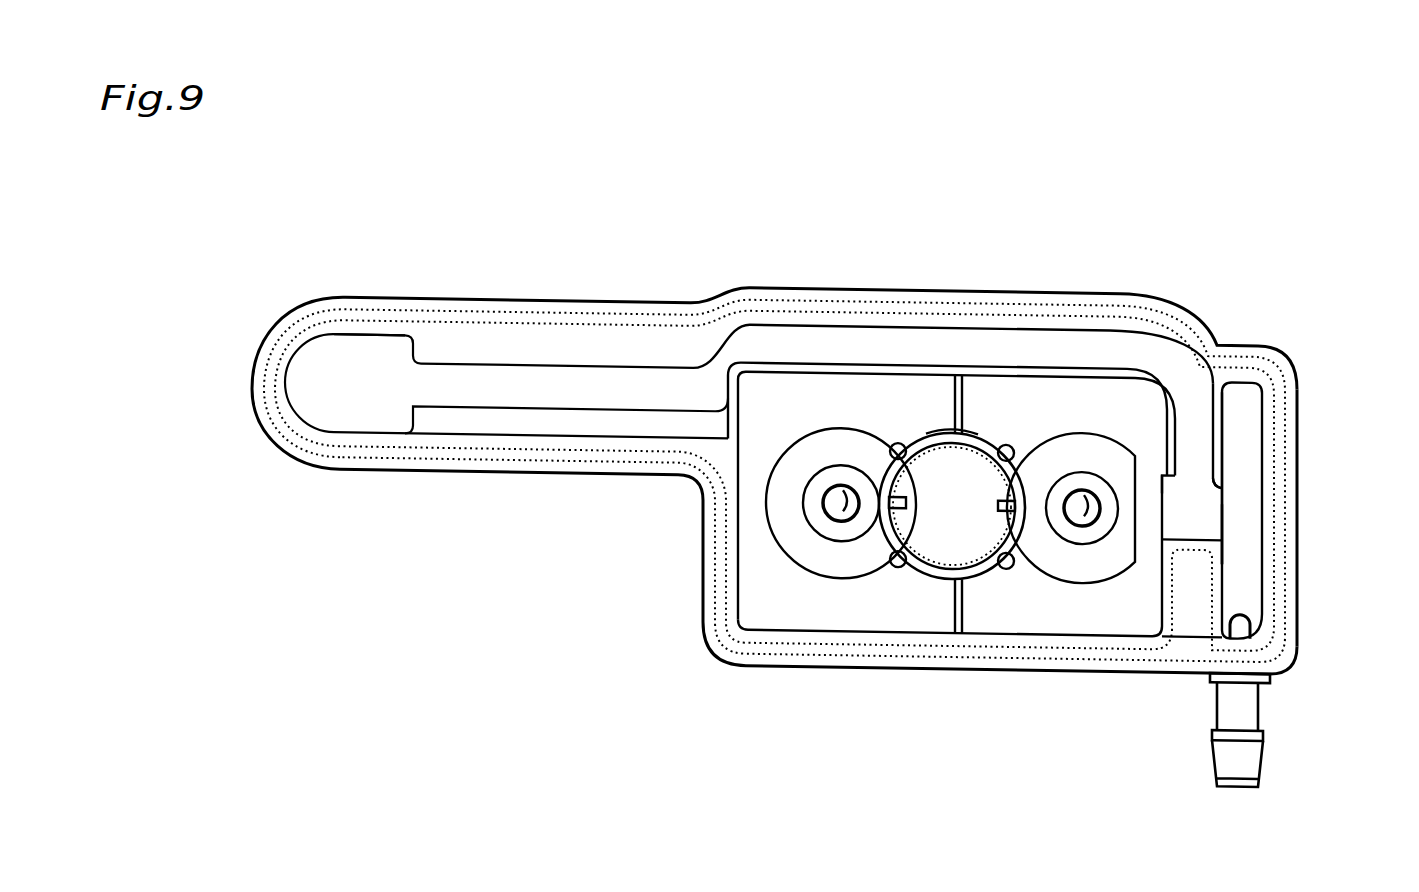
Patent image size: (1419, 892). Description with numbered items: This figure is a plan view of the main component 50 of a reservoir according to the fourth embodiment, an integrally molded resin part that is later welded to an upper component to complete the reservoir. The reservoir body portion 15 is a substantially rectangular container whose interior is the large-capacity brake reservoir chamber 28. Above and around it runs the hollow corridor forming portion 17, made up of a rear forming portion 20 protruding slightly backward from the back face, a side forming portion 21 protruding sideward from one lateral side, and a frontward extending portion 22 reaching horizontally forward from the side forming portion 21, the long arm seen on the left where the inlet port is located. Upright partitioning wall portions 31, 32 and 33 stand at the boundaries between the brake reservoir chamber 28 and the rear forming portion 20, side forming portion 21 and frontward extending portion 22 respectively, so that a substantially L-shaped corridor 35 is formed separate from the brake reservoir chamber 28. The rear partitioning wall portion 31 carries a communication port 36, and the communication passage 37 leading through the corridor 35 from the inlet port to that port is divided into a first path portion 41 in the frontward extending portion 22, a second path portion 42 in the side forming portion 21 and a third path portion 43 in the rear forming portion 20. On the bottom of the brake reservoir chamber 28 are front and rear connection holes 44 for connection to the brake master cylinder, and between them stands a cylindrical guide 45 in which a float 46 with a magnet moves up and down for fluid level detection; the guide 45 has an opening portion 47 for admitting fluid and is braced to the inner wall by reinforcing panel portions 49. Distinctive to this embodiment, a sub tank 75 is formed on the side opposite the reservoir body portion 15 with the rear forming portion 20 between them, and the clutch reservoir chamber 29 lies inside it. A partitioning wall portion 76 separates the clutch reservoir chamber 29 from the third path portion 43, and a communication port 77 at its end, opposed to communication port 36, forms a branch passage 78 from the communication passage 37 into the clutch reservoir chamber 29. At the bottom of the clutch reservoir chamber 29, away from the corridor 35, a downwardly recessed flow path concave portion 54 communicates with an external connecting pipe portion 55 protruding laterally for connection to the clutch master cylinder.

The reservoir body portion 15 is at (935, 678).
The corridor forming portion 17 is at (593, 290).
The rear forming portion 20 is at (1208, 441).
The side forming portion 21 is at (866, 291).
The frontward extending portion 22 is at (446, 298).
The brake reservoir chamber 28 is at (758, 592).
The clutch reservoir chamber 29 is at (1248, 552).
The partitioning wall portion 31 is at (1174, 458).
The partitioning wall portion 32 is at (1062, 368).
The partitioning wall portion 33 is at (748, 414).
The corridor 35 is at (907, 333).
The communication port 36 is at (1221, 506).
The communication passage 37 is at (666, 385).
The first path portion 41 is at (521, 383).
The second path portion 42 is at (819, 342).
The third path portion 43 is at (1194, 417).
The connection holes 44 is at (833, 500).
The guide 45 is at (990, 562).
The float 46 is at (924, 562).
The opening portion 47 is at (909, 440).
The reinforcing panel portion 49 is at (964, 406).
The main component 50 is at (1295, 317).
The flow path concave portion 54 is at (1240, 628).
The external connecting pipe portion 55 is at (1248, 768).
The sub tank 75 is at (1299, 590).
The partitioning wall portion 76 is at (1227, 427).
The communication port 77 is at (1228, 492).
The branch passage 78 is at (1218, 523).